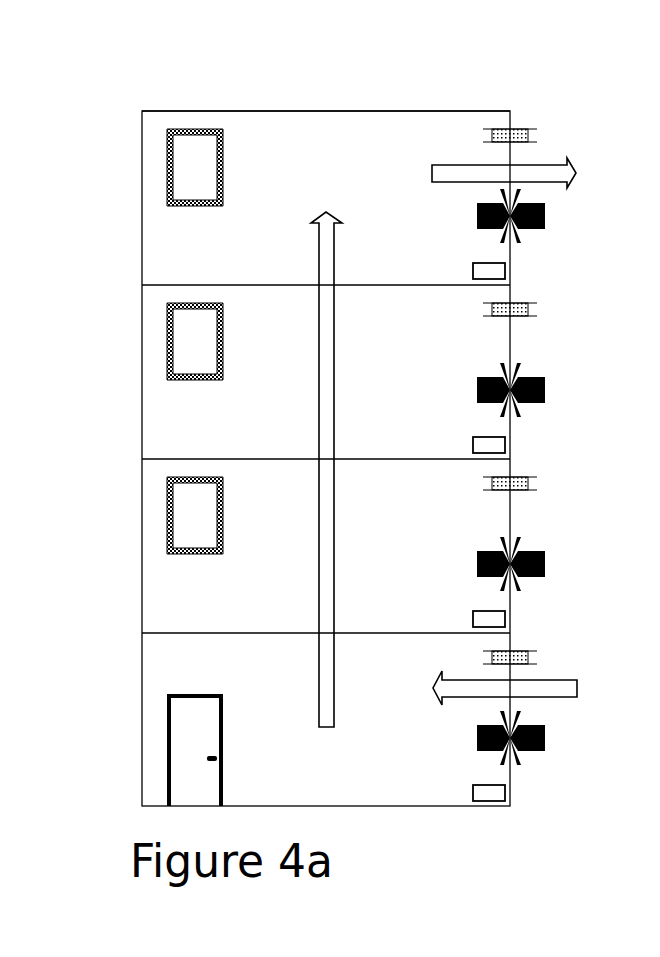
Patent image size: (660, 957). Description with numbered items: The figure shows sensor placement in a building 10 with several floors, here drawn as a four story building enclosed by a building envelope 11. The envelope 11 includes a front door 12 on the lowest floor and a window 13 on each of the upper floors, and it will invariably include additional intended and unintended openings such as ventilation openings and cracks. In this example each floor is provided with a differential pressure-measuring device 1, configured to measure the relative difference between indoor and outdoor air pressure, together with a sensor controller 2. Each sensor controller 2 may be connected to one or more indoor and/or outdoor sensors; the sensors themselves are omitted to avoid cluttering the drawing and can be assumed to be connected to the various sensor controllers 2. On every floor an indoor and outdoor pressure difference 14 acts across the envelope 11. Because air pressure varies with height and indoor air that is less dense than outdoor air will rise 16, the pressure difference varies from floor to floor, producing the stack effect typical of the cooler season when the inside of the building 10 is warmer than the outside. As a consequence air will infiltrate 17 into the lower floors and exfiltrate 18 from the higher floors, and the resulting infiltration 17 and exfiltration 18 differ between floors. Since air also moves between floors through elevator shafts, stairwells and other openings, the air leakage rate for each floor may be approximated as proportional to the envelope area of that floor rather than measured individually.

The differential pressure-measuring device 1 is at (502, 393).
The sensor controller 2 is at (486, 522).
The building 10 is at (218, 91).
The building envelope 11 is at (363, 109).
The front door 12 is at (160, 750).
The windows 13 is at (213, 341).
The indoor and outdoor pressure differences 14 is at (526, 477).
The rising indoor air 16 is at (338, 469).
The infiltration 17 is at (505, 684).
The exfiltration 18 is at (516, 173).